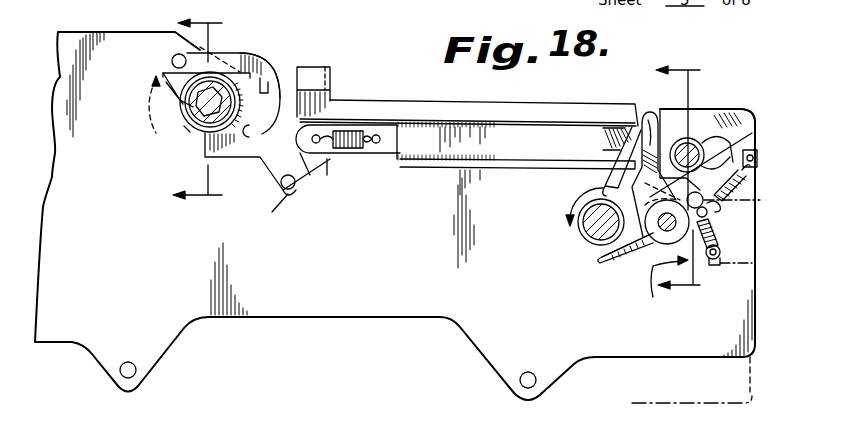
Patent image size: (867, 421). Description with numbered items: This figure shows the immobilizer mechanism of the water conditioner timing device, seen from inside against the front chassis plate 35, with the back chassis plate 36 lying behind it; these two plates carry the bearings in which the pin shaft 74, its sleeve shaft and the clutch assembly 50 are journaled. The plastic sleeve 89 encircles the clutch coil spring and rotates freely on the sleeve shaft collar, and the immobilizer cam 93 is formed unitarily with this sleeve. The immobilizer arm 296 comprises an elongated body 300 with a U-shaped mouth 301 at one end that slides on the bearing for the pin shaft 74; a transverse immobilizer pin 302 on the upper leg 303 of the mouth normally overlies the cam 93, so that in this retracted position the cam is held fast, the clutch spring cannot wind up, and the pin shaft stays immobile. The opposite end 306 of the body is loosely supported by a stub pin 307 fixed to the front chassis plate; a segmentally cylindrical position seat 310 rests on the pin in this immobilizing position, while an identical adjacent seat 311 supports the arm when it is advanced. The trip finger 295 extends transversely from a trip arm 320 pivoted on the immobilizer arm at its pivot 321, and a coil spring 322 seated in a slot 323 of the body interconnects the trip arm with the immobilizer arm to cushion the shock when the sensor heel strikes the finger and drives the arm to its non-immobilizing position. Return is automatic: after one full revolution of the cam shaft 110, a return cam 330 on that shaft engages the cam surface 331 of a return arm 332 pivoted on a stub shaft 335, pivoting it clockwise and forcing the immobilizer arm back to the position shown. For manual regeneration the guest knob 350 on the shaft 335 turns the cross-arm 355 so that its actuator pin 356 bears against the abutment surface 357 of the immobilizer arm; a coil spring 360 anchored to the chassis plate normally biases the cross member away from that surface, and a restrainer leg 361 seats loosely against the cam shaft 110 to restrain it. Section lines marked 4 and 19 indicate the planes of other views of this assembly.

The section line 4- 4 is at (205, 111).
The section line 19- 19 is at (694, 179).
The front chassis plate 35 is at (760, 402).
The back chassis plate 36 is at (58, 80).
The clutch assembly 50 is at (180, 130).
The pin shaft 74 is at (215, 103).
The plastic sleeve 89 is at (195, 133).
The immobilizer cam 93 is at (185, 92).
The cam shaft 110 is at (580, 236).
The trip finger 295 is at (310, 78).
The immobilizer arm 296 is at (293, 63).
The elongated body 300 is at (445, 118).
The U-shaped mouth 301 is at (248, 134).
The immobilizer pin 302 is at (176, 54).
The upper leg 303 is at (258, 62).
The opposite end 306 is at (708, 116).
The stub pin 307 is at (738, 130).
The position seat 310 is at (658, 124).
The segmentally cylindrical seat 311 is at (757, 150).
The trip arm 320 is at (325, 106).
The pivot 321 is at (272, 212).
The spring 322 is at (356, 150).
The slot 323 is at (322, 165).
The return cam 330 is at (595, 190).
The cam surface 331 is at (614, 178).
The return arm 332 is at (637, 140).
The stub shaft 335 is at (669, 286).
The guest knob 350 is at (612, 272).
The cross-arm 355 is at (628, 262).
The actuator pin 356 is at (720, 210).
The abutment surface 357 is at (724, 197).
The coil spring 360 is at (720, 240).
The restrainer leg 361 is at (598, 262).